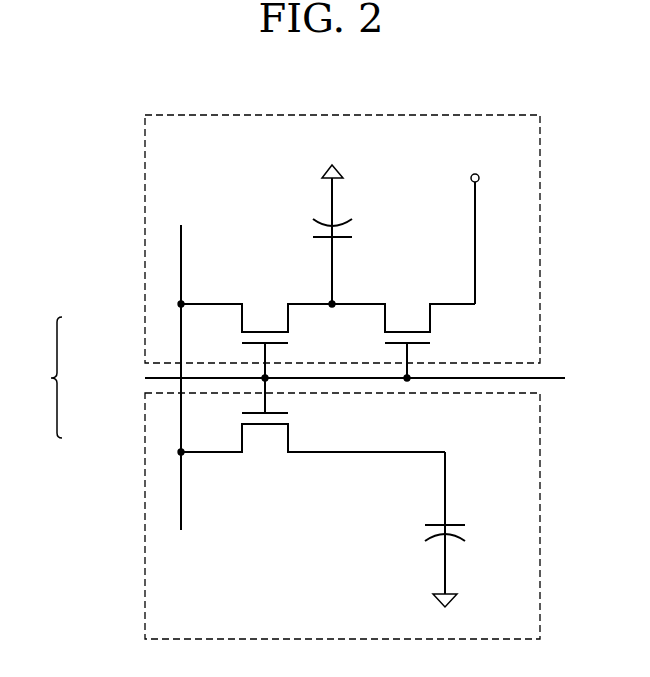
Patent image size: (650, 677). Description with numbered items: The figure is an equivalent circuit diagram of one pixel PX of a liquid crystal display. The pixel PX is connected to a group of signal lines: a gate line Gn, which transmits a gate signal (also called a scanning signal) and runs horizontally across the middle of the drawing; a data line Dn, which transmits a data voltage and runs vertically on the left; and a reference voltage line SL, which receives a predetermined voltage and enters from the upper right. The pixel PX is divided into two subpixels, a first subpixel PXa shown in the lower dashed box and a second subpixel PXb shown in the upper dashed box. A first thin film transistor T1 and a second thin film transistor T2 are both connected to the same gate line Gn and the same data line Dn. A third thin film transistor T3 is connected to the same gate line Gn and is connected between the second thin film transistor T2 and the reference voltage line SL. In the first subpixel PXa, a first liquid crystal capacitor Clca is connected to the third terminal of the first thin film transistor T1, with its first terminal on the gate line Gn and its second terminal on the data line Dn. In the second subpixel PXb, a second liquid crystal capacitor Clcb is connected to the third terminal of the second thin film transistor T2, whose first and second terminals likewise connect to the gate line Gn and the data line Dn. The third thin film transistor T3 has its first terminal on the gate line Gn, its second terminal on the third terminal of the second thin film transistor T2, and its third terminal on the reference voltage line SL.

The pixel PX is at (41, 377).
The first subpixel PXa is at (145, 425).
The second subpixel PXb is at (145, 321).
The data line Dn is at (182, 328).
The gate line Gn is at (371, 378).
The reference voltage line SL is at (473, 227).
The first thin film transistor T1 is at (313, 426).
The second thin film transistor T2 is at (256, 330).
The third thin film transistor T3 is at (403, 330).
The first liquid crystal capacitor Clca is at (419, 529).
The second liquid crystal capacitor Clcb is at (307, 236).